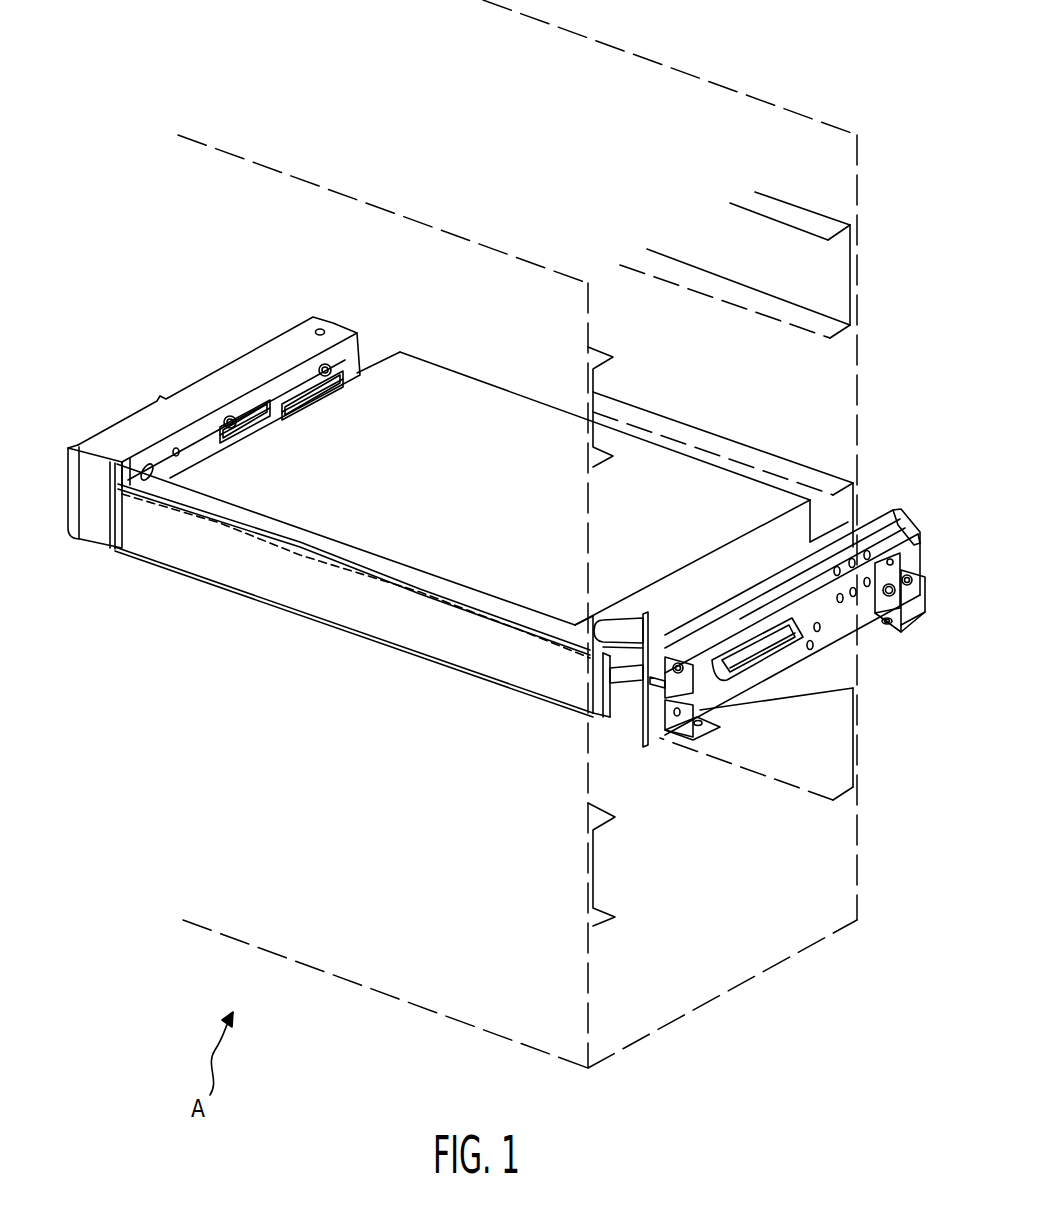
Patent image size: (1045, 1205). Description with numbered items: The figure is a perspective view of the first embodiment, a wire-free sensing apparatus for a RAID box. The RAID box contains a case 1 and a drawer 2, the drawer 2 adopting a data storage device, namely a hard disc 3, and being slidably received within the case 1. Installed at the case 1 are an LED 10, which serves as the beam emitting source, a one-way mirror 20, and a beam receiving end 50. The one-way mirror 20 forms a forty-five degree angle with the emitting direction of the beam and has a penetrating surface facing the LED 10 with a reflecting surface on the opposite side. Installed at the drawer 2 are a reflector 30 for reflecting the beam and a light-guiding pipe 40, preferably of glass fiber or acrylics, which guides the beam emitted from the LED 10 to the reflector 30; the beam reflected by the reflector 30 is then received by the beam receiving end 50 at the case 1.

The case 1 is at (868, 648).
The drawer 2 is at (247, 372).
The hard disc 3 is at (458, 388).
The LED 10 is at (638, 672).
The one-way mirror 20 is at (610, 688).
The reflector 30 is at (110, 498).
The light-guiding pipe 40 is at (543, 638).
The beam receiving end 50 is at (637, 632).